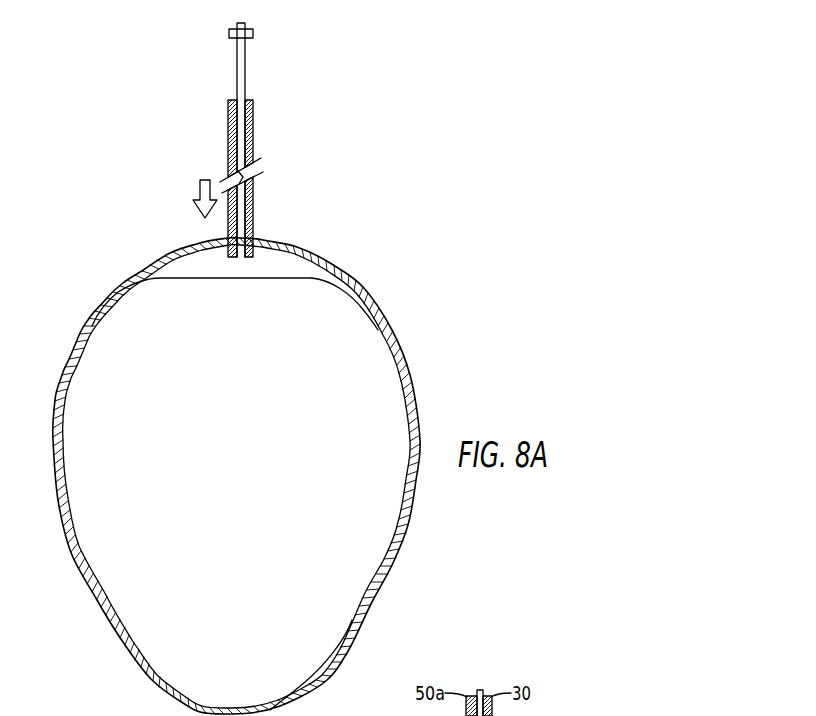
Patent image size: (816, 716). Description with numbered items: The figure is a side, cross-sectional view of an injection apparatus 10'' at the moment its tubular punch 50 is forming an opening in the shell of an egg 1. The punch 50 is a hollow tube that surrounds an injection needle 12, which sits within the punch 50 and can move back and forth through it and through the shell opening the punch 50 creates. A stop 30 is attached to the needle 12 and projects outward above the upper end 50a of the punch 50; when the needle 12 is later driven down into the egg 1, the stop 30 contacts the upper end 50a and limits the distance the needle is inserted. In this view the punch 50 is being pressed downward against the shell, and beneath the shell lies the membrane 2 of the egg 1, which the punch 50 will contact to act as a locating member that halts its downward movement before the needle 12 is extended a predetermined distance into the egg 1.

The egg 1 is at (378, 306).
The membrane 2 is at (303, 277).
The injection needle 12 is at (240, 218).
The stop 30 is at (253, 33).
The tubular punch 50 is at (226, 233).
The upper end of the punch 50a is at (232, 100).
The injection apparatus 10'' is at (283, 188).